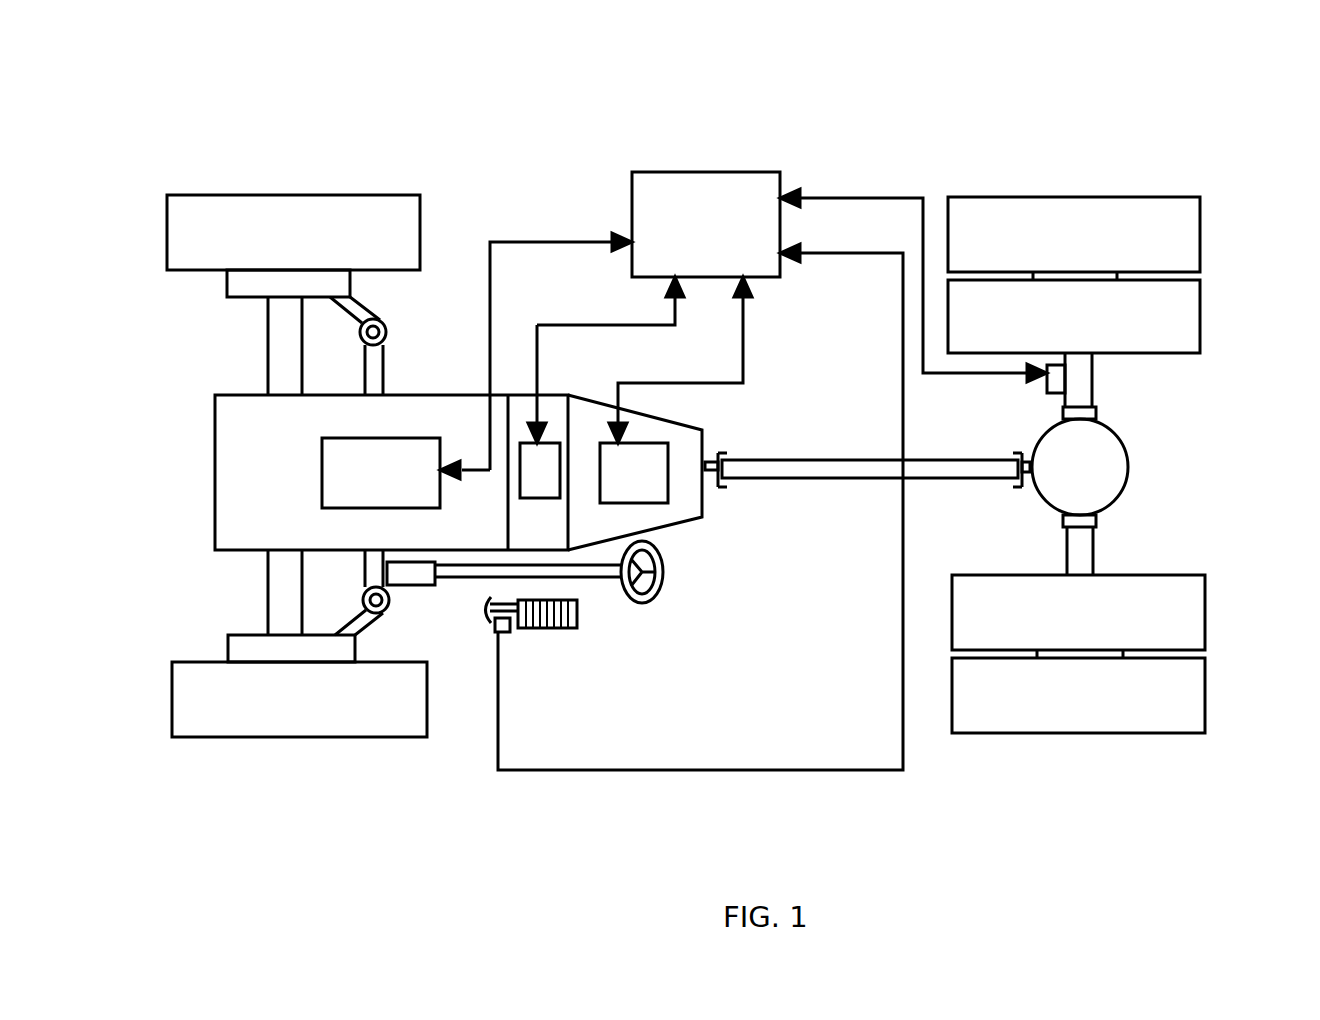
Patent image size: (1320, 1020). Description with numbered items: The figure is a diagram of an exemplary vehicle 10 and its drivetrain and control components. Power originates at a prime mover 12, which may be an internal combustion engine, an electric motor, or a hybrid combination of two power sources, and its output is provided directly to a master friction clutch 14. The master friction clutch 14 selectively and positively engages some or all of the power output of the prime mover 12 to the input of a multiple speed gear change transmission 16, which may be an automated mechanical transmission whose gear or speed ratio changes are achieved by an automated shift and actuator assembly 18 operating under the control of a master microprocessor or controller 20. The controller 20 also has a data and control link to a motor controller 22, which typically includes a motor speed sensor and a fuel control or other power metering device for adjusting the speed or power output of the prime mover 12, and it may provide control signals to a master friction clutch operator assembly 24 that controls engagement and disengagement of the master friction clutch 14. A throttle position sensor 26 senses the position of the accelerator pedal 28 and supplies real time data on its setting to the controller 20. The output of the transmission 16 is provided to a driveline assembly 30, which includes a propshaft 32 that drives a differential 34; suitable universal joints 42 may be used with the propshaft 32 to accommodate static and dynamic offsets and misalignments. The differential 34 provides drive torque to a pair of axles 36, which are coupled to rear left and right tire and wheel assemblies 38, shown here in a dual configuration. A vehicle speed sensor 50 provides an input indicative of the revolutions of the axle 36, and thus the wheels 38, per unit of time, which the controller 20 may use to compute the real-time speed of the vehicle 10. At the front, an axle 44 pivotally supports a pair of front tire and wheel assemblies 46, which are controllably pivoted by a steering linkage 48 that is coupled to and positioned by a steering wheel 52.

The vehicle 10 is at (1032, 112).
The prime mover 12 is at (242, 523).
The master friction clutch 14 is at (555, 408).
The multiple speed gear change transmission 16 is at (678, 502).
The shift and actuator assembly 18 is at (647, 470).
The controller 20 is at (707, 172).
The motor controller 22 is at (375, 475).
The master friction clutch operator assembly 24 is at (537, 487).
The throttle position sensor 26 is at (503, 633).
The accelerator pedal 28 is at (577, 614).
The driveline assembly 30 is at (1037, 797).
The propshaft 32 is at (920, 460).
The differential 34 is at (1128, 460).
The axle 36 is at (1093, 392).
The tire and wheel assembly 38 is at (1200, 245).
The universal joint 42 is at (722, 455).
The axle 44 is at (268, 375).
The front tire and wheel assembly 46 is at (278, 195).
The steering linkage 48 is at (386, 608).
The vehicle speed sensor 50 is at (1040, 385).
The steering wheel 52 is at (664, 568).